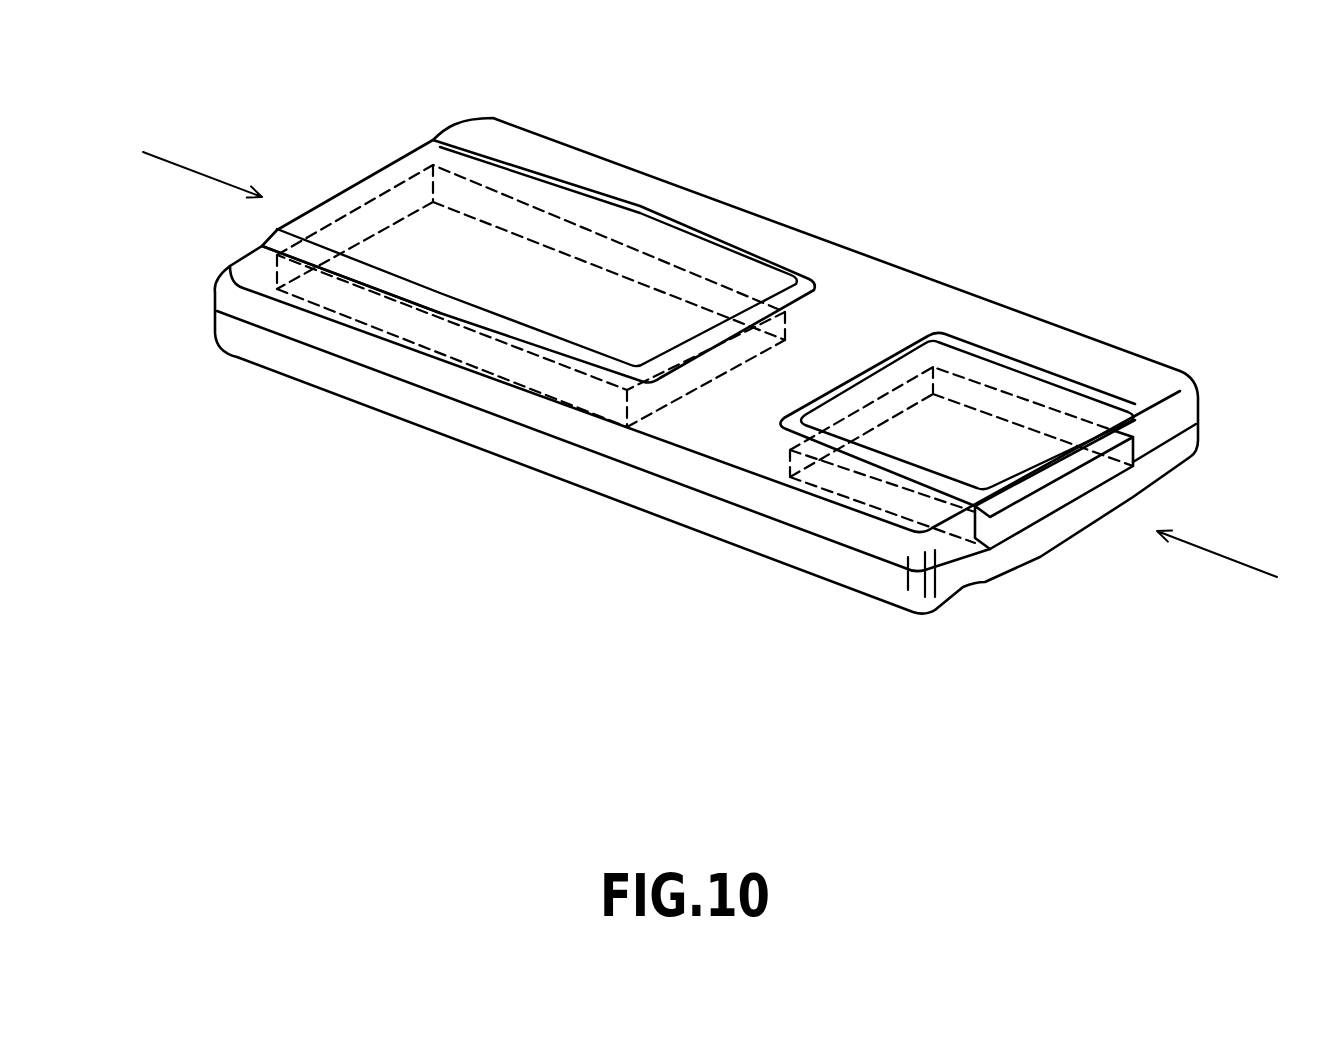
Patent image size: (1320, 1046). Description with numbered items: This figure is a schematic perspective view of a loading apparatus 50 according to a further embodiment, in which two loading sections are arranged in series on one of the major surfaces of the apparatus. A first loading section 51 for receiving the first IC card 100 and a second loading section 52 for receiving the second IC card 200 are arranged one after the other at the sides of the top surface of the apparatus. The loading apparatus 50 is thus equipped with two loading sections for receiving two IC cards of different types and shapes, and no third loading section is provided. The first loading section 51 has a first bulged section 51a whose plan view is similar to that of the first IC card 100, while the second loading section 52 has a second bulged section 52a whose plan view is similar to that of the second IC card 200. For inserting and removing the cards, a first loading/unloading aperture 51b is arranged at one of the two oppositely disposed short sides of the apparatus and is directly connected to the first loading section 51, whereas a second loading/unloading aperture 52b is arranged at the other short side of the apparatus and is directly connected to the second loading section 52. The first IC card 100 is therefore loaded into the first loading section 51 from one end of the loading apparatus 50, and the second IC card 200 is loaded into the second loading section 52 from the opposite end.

The loading apparatus 50 is at (1134, 183).
The first loading section 51 is at (660, 240).
The first bulged section 51a is at (567, 207).
The first loading/unloading aperture 51b is at (353, 230).
The second loading section 52 is at (987, 367).
The second bulged section 52a is at (921, 363).
The second loading/unloading aperture 52b is at (1062, 495).
The first IC card 100 is at (385, 192).
The second IC card 200 is at (1017, 522).